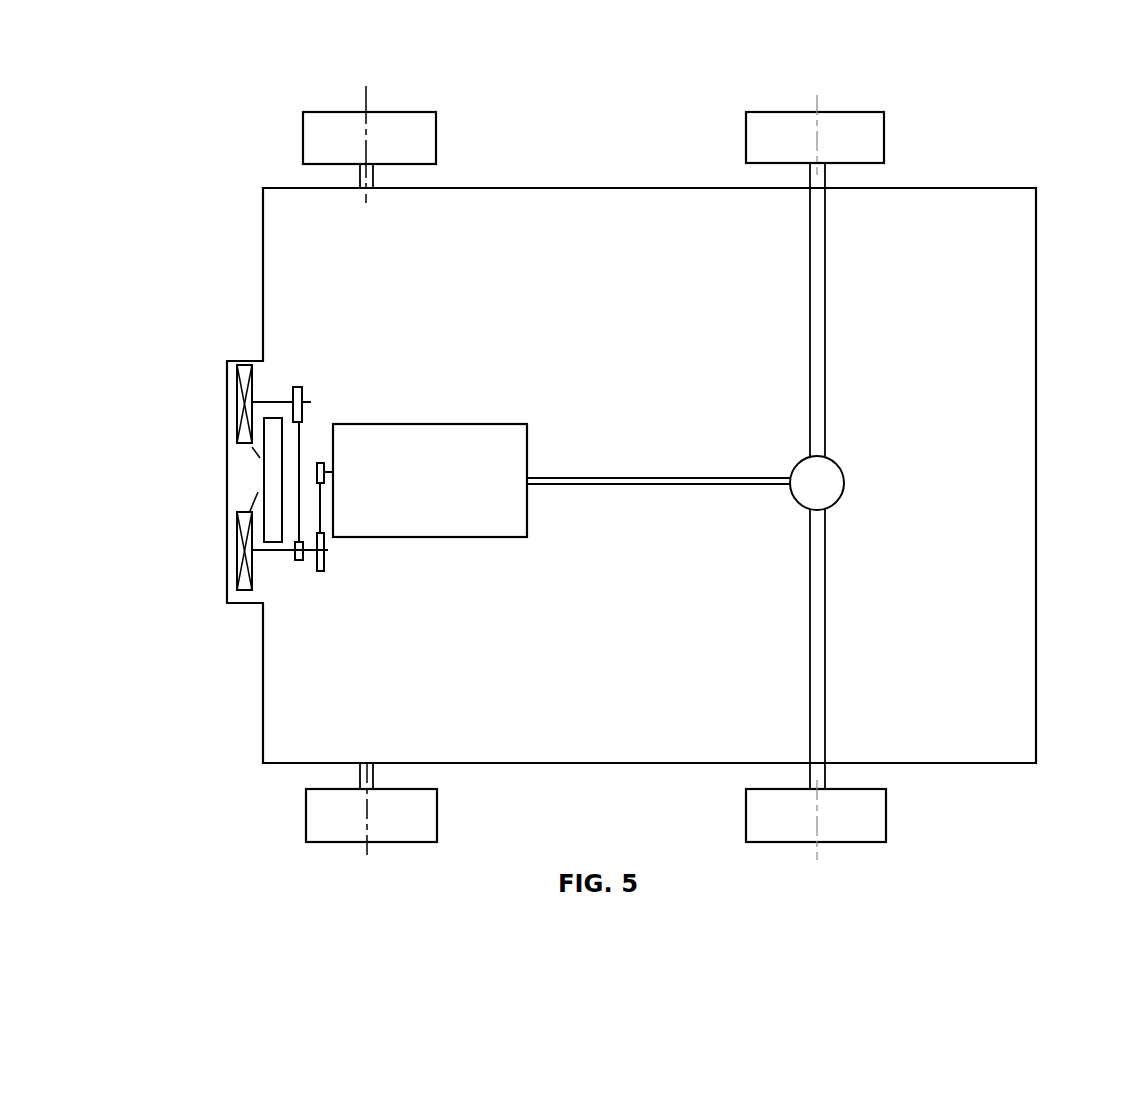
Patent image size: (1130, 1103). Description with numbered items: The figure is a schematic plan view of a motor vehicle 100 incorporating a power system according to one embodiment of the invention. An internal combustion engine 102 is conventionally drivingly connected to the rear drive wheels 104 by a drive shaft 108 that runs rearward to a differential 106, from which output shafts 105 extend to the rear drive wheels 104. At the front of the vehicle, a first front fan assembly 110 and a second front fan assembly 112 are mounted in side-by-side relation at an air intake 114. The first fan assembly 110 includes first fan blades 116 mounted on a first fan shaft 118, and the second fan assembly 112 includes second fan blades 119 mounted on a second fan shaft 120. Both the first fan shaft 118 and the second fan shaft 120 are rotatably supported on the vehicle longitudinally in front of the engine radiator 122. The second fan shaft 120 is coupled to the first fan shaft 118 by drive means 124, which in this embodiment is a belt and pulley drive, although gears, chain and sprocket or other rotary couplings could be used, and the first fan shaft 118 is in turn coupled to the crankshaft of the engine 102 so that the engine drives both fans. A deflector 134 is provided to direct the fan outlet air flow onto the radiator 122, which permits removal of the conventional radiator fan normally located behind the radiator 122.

The motor vehicle 100 is at (1051, 746).
The internal combustion engine 102 is at (485, 424).
The rear drive wheels 104 is at (857, 142).
The output shafts 105 is at (815, 598).
The differential 106 is at (832, 488).
The drive shaft 108 is at (688, 482).
The first front fan assembly 110 is at (233, 540).
The second front fan assembly 112 is at (240, 402).
The air intake 114 is at (227, 361).
The first fan blades 116 is at (245, 578).
The first fan shaft 118 is at (328, 553).
The second fan blades 119 is at (243, 367).
The second fan shaft 120 is at (272, 400).
The engine radiator 122 is at (263, 470).
The drive means 124 is at (299, 440).
The deflector 134 is at (258, 492).